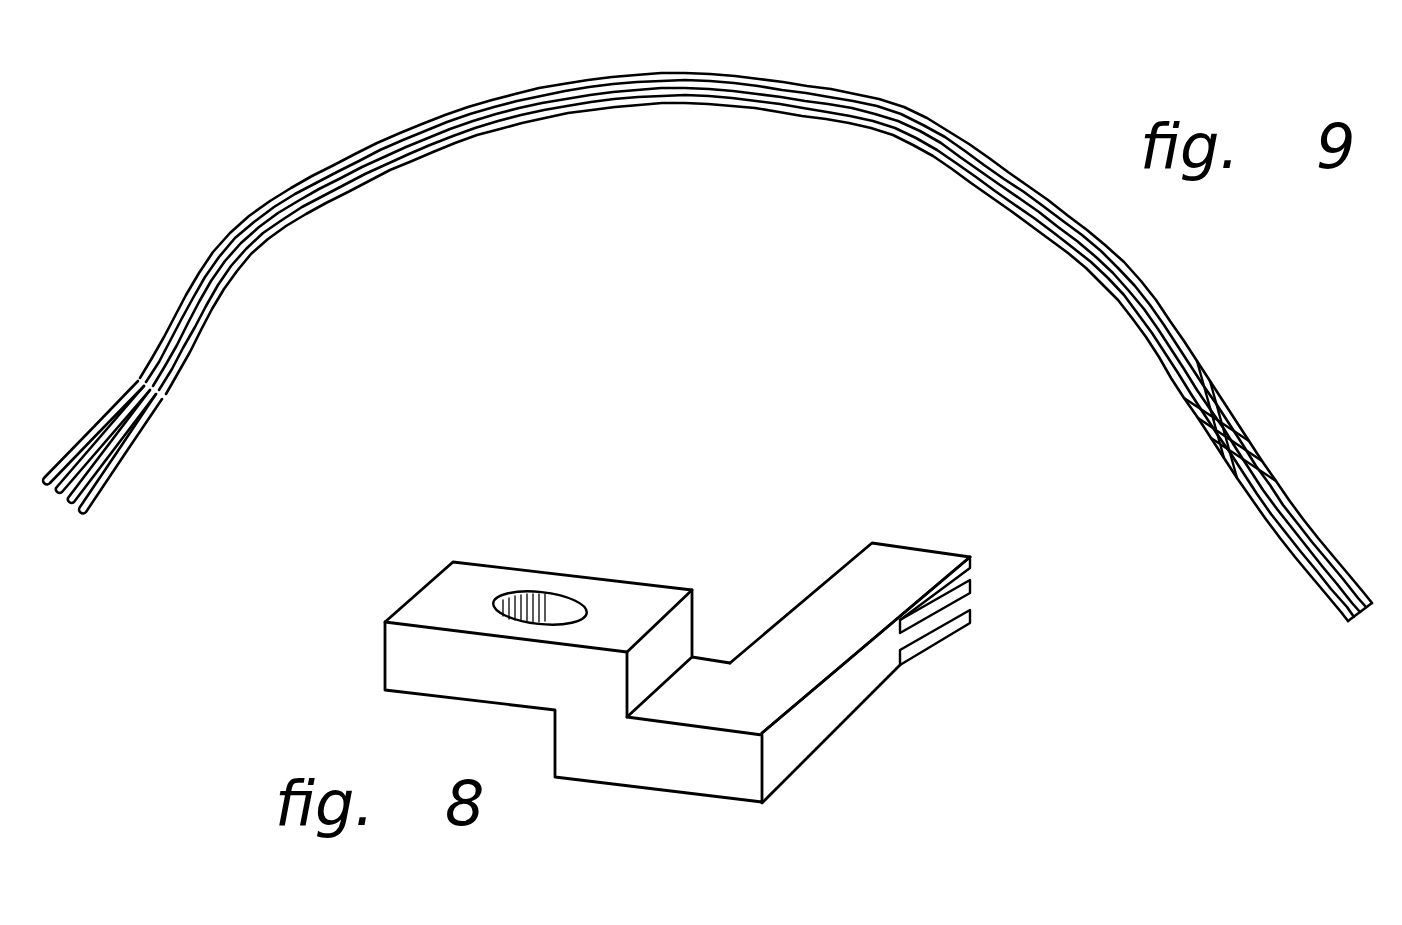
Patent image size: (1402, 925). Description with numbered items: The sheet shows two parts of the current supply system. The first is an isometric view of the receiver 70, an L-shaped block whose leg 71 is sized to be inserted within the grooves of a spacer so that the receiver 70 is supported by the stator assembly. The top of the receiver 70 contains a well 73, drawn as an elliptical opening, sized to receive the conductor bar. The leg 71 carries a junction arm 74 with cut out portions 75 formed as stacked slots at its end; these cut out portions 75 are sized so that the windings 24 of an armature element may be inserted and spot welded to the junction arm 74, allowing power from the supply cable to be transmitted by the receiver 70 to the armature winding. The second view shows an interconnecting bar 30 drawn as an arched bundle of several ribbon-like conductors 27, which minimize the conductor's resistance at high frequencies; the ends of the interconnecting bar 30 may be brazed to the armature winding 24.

In FIG. 9, the armature winding 24 is at (1347, 562).
In FIG. 9, the ribbon-like conductors 27 is at (270, 218).
In FIG. 9, the interconnecting bar 30 is at (867, 97).
In FIG. 8, the receiver 70 is at (408, 667).
In FIG. 8, the leg 71 is at (837, 708).
In FIG. 8, the well 73 is at (553, 603).
In FIG. 8, the junction arm 74 is at (907, 567).
In FIG. 8, the cut out portions 75 is at (967, 604).